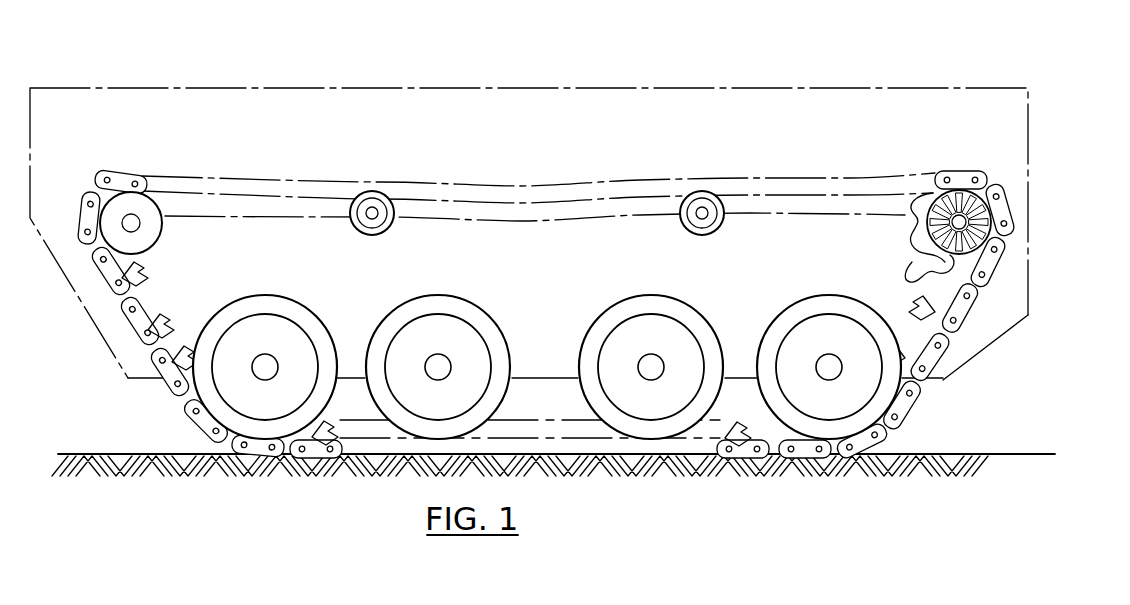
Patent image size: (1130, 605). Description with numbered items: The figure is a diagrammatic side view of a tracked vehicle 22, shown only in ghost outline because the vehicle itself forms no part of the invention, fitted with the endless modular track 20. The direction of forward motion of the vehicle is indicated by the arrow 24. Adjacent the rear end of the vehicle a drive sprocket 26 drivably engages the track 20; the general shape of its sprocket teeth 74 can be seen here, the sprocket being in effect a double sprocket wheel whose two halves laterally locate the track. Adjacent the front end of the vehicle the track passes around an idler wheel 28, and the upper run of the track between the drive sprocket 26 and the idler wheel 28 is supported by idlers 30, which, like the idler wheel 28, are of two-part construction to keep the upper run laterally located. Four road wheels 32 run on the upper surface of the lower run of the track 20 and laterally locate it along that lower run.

The track 20 is at (172, 402).
The tracked vehicle 22 is at (972, 113).
The arrow 24 is at (167, 54).
The drive sprocket 26 is at (892, 252).
The idler wheel 28 is at (151, 230).
The idlers 30 is at (387, 228).
The road wheels 32 is at (315, 323).
The sprocket teeth 74 is at (925, 270).